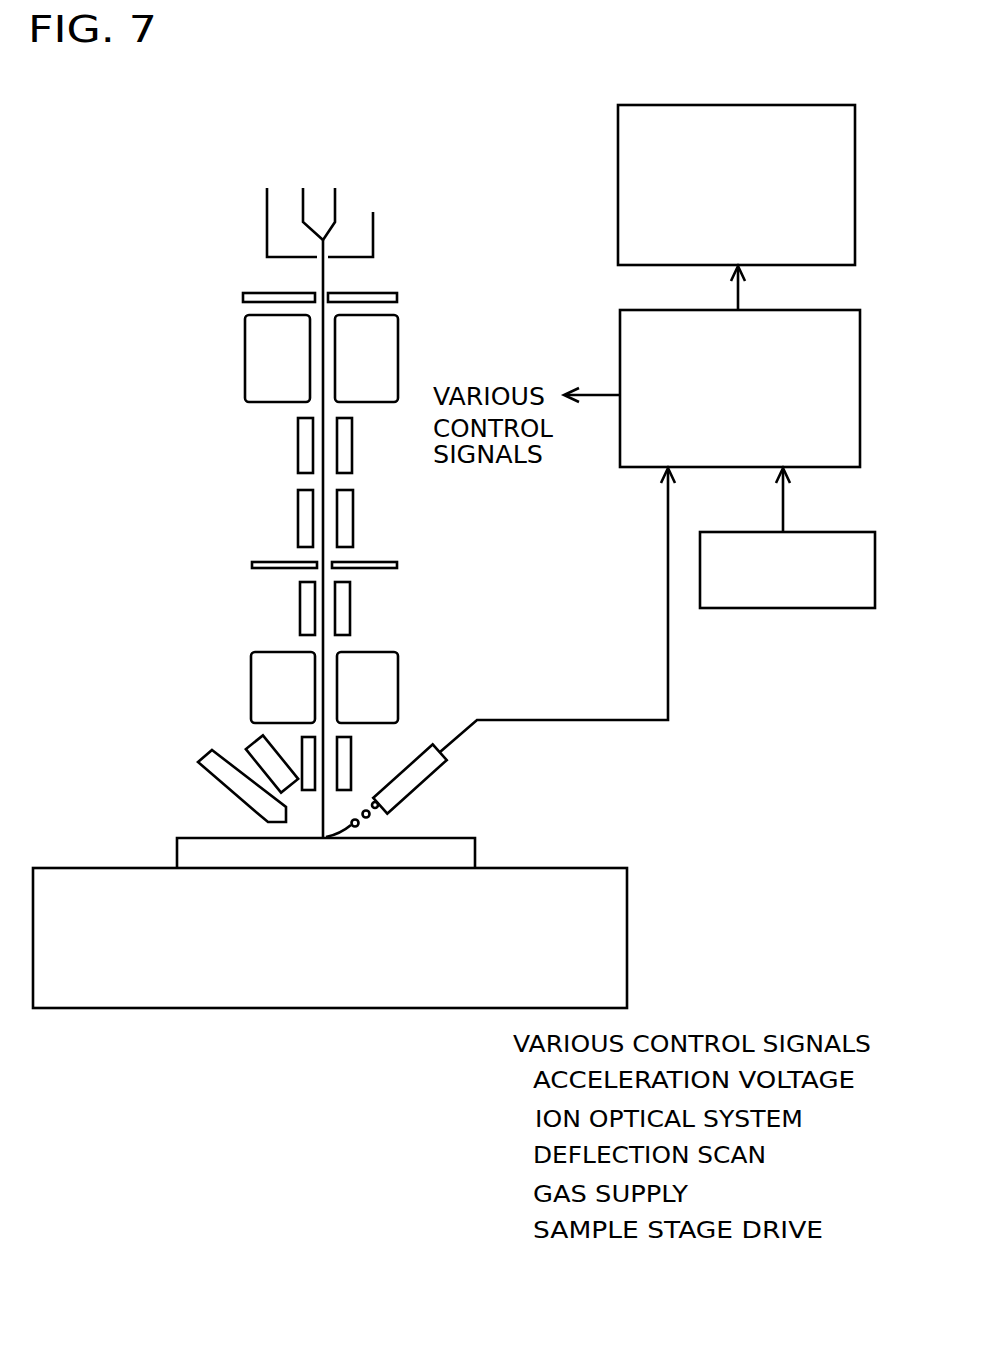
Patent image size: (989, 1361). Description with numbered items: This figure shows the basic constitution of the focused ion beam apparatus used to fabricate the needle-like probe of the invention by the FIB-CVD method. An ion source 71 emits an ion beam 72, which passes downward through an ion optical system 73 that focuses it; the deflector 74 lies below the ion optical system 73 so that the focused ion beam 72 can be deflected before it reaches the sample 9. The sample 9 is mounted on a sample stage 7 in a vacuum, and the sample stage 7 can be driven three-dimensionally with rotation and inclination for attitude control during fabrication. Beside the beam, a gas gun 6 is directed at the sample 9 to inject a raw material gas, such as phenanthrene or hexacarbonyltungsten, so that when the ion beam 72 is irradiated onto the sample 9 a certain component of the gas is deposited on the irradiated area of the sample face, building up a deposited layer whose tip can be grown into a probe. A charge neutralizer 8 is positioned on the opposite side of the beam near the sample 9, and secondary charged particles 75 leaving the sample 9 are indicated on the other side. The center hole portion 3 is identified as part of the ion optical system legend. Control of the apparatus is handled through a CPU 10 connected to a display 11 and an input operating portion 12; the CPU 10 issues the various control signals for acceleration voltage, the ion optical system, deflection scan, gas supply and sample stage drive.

The center hole portion 3 is at (279, 689).
The gas gun 6 is at (250, 790).
The sample stage 7 is at (610, 928).
The charge neutralizer 8 is at (263, 750).
The sample 9 is at (435, 852).
The CPU 10 is at (637, 323).
The display 11 is at (633, 163).
The input operating portion 12 is at (740, 595).
The ion source 71 is at (322, 217).
The ion beam 72 is at (320, 337).
The ion optical system 73 is at (235, 713).
The deflector 74 is at (345, 757).
The secondary charged particle 75 is at (418, 777).